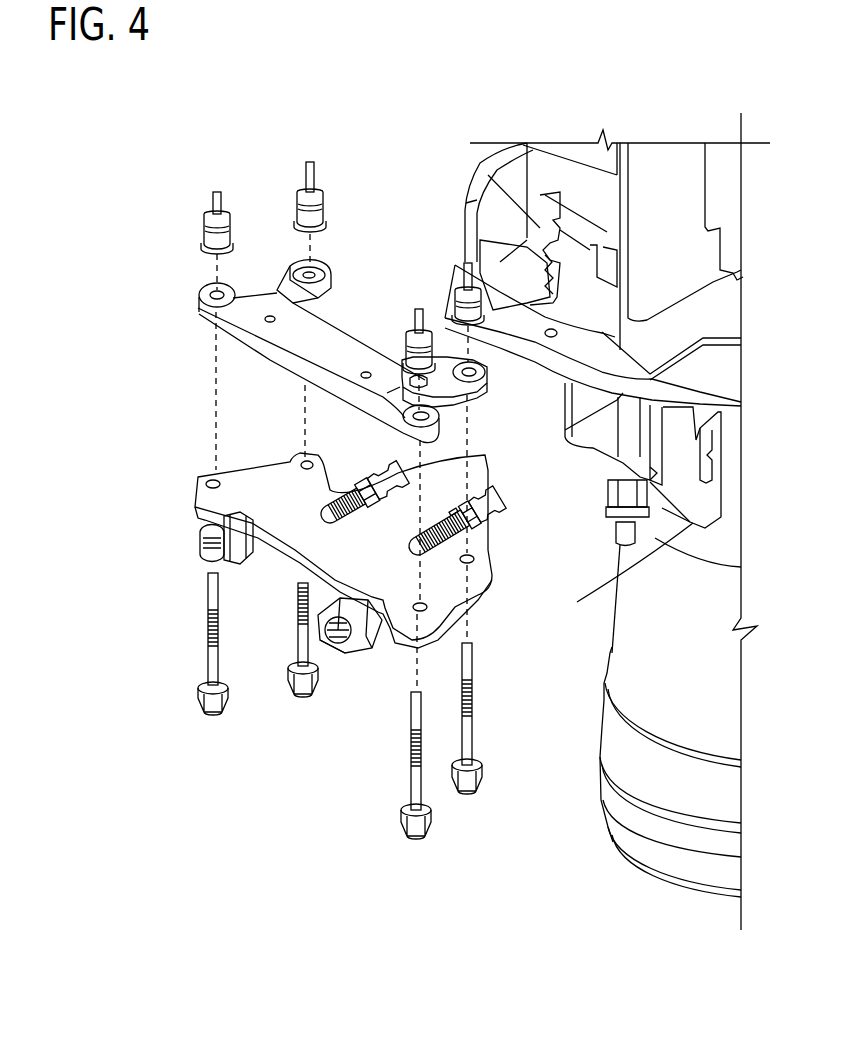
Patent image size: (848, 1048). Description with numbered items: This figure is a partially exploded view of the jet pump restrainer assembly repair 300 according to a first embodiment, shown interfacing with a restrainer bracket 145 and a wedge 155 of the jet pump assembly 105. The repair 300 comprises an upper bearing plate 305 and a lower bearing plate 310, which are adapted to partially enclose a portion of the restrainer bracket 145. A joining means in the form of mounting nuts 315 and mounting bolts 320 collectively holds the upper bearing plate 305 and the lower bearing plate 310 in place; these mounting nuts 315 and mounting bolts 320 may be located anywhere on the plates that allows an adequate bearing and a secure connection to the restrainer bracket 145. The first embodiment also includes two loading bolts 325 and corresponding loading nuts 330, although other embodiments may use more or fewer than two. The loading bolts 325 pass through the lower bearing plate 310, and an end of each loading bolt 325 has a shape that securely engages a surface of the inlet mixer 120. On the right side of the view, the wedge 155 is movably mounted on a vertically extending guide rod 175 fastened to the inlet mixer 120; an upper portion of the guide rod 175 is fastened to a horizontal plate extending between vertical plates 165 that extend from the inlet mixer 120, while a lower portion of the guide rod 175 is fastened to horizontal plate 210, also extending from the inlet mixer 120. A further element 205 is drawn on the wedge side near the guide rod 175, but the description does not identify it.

The jet pump assembly 105 is at (615, 815).
The inlet mixer 120 is at (612, 647).
The restrainer bracket 145 is at (488, 155).
The wedge 155 is at (570, 202).
The vertical plates 165 is at (660, 162).
The guide rod 175 is at (615, 532).
The clamp 205 is at (577, 452).
The horizontal plate 210 is at (577, 602).
The jet pump restrainer assembly repair 300 is at (104, 602).
The upper bearing plate 305 is at (198, 300).
The lower bearing plate 310 is at (200, 479).
The mounting nuts 315 is at (310, 162).
The mounting bolts 320 is at (300, 697).
The loading bolts 325 is at (476, 493).
The loading nuts 330 is at (230, 560).